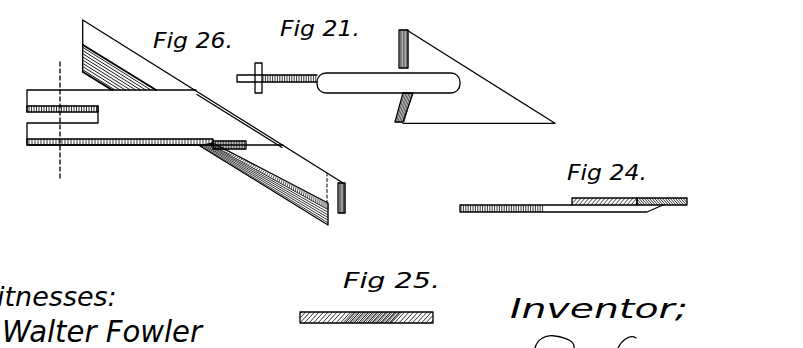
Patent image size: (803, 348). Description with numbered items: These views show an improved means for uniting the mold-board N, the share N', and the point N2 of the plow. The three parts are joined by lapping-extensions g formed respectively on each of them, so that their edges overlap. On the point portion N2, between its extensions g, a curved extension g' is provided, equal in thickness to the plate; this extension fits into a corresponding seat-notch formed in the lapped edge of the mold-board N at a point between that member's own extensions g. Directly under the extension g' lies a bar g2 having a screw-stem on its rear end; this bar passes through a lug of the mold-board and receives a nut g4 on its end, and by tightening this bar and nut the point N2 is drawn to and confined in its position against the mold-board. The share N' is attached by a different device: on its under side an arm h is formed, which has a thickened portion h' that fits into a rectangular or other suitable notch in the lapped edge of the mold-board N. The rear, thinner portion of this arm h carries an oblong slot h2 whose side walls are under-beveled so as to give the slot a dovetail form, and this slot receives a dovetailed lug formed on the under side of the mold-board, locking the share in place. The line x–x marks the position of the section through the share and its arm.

In FIG. 26, the lapping-extensions g is at (212, 149).
In FIG. 21, the lapping-extensions g is at (399, 78).
In FIG. 21, the curved extension g' is at (414, 64).
In FIG. 24, the curved extension g' is at (639, 190).
In FIG. 21, the bar g2 is at (388, 81).
In FIG. 24, the bar g2 is at (561, 217).
In FIG. 21, the nut g4 is at (277, 69).
In FIG. 26, the arm h is at (155, 117).
In FIG. 25, the arm h is at (366, 310).
In FIG. 26, the thickened portion h' is at (264, 183).
In FIG. 26, the oblong slot h2 is at (120, 120).
In FIG. 25, the oblong slot h2 is at (350, 325).
In FIG. 24, the mold-board N is at (606, 195).
In FIG. 26, the share N' is at (213, 101).
In FIG. 21, the point N2 is at (479, 76).
In FIG. 24, the point N2 is at (662, 194).
In FIG. 26, the section line x is at (58, 121).